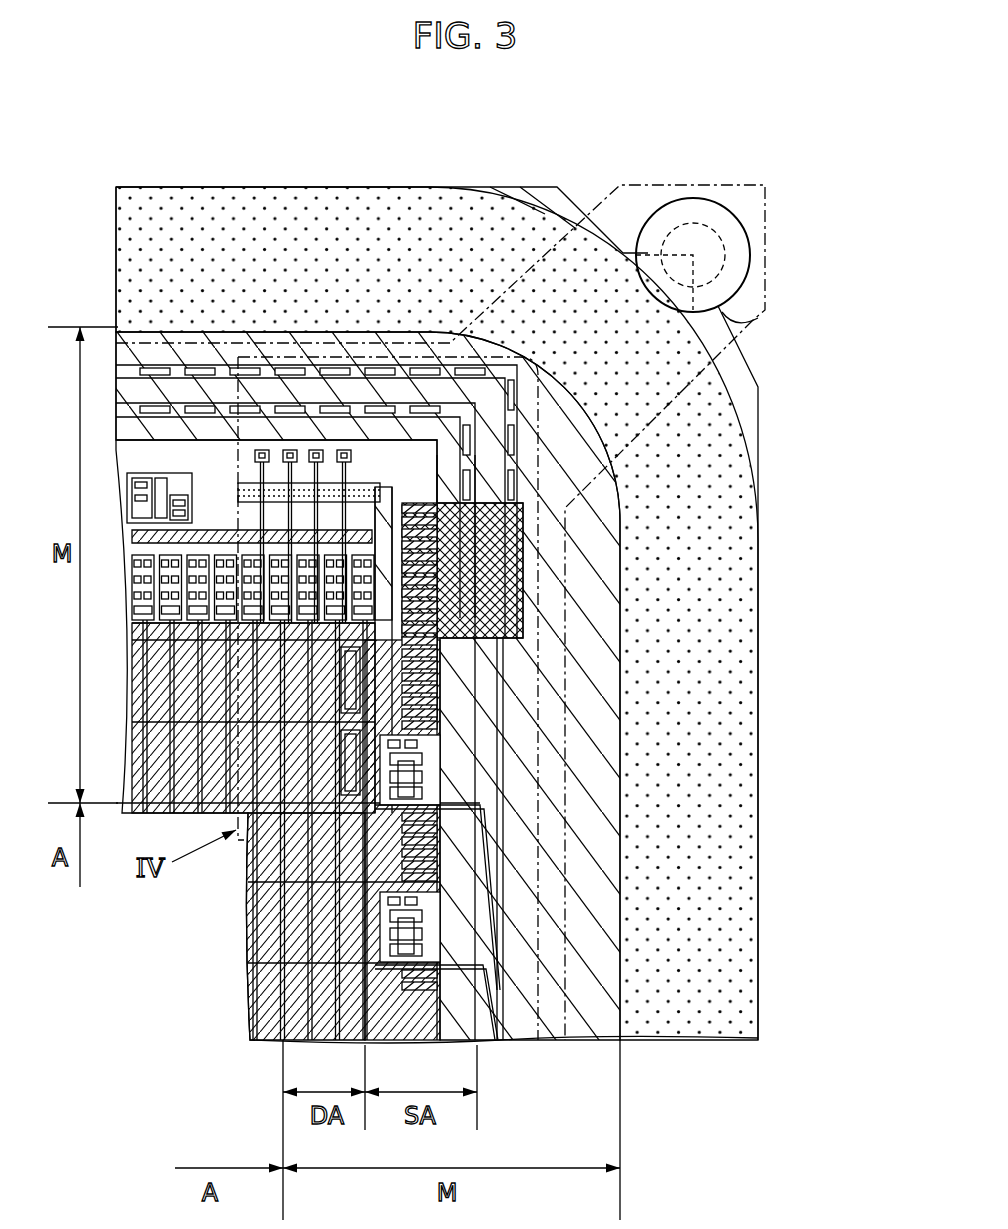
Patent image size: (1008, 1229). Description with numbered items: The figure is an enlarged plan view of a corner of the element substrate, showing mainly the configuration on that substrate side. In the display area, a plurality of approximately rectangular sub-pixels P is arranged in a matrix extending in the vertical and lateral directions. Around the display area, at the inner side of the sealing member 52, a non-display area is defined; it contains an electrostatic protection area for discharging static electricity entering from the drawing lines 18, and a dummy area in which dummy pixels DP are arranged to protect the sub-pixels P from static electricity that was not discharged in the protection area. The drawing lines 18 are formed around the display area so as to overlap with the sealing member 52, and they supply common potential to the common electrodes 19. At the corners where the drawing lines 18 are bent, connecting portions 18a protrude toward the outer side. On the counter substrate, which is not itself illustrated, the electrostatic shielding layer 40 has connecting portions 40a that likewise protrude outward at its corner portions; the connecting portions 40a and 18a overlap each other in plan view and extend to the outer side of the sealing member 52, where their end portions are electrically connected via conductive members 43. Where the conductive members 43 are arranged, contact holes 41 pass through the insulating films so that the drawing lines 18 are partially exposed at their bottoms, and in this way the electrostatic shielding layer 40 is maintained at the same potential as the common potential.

The drawing line 18 is at (750, 403).
The connecting portion 18a is at (700, 308).
The common electrode 19 is at (293, 1012).
The electrostatic shielding layer 40 is at (178, 341).
The connecting portion 40a is at (641, 185).
The contact hole 41 is at (693, 224).
The conductive member 43 is at (745, 330).
The sealing member 52 is at (735, 685).
The sub-pixel P is at (267, 917).
The dummy pixel DP is at (293, 941).